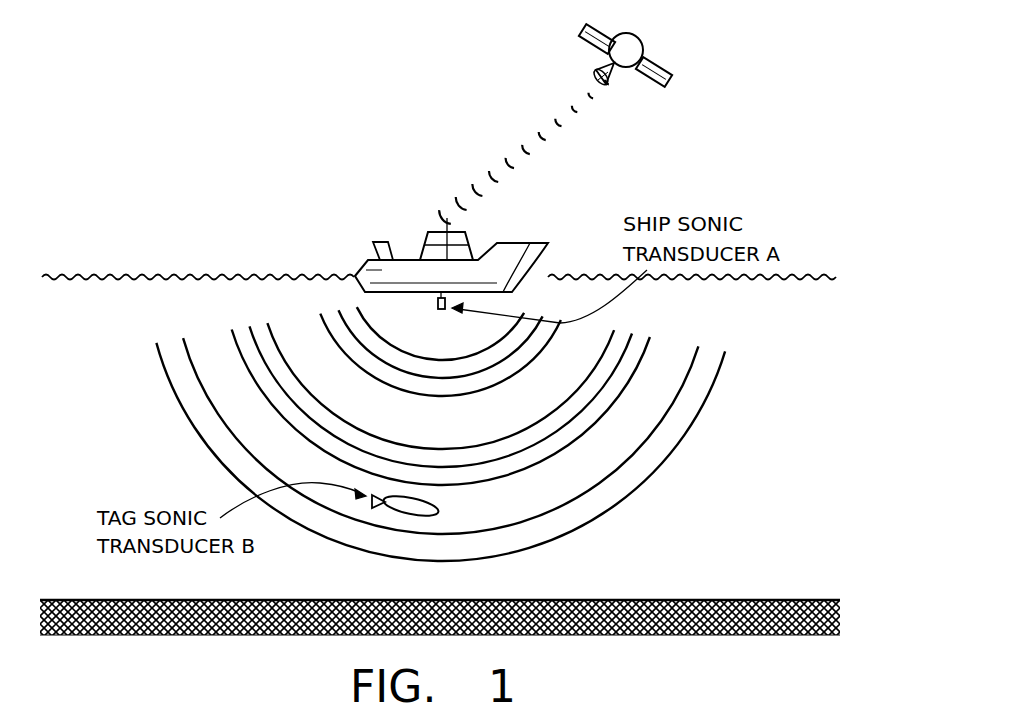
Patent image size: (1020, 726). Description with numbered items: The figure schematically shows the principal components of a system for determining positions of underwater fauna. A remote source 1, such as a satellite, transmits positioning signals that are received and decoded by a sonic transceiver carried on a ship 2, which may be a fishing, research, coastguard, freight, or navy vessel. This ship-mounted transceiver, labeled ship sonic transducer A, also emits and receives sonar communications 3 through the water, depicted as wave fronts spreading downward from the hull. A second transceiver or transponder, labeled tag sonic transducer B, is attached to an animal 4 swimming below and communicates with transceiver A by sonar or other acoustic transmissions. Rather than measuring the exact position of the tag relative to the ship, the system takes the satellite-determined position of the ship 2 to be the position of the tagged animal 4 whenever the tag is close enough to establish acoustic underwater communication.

The remote source 1 is at (656, 58).
The ship 2 is at (398, 250).
The sonar communications 3 is at (282, 351).
The animal 4 is at (433, 503).